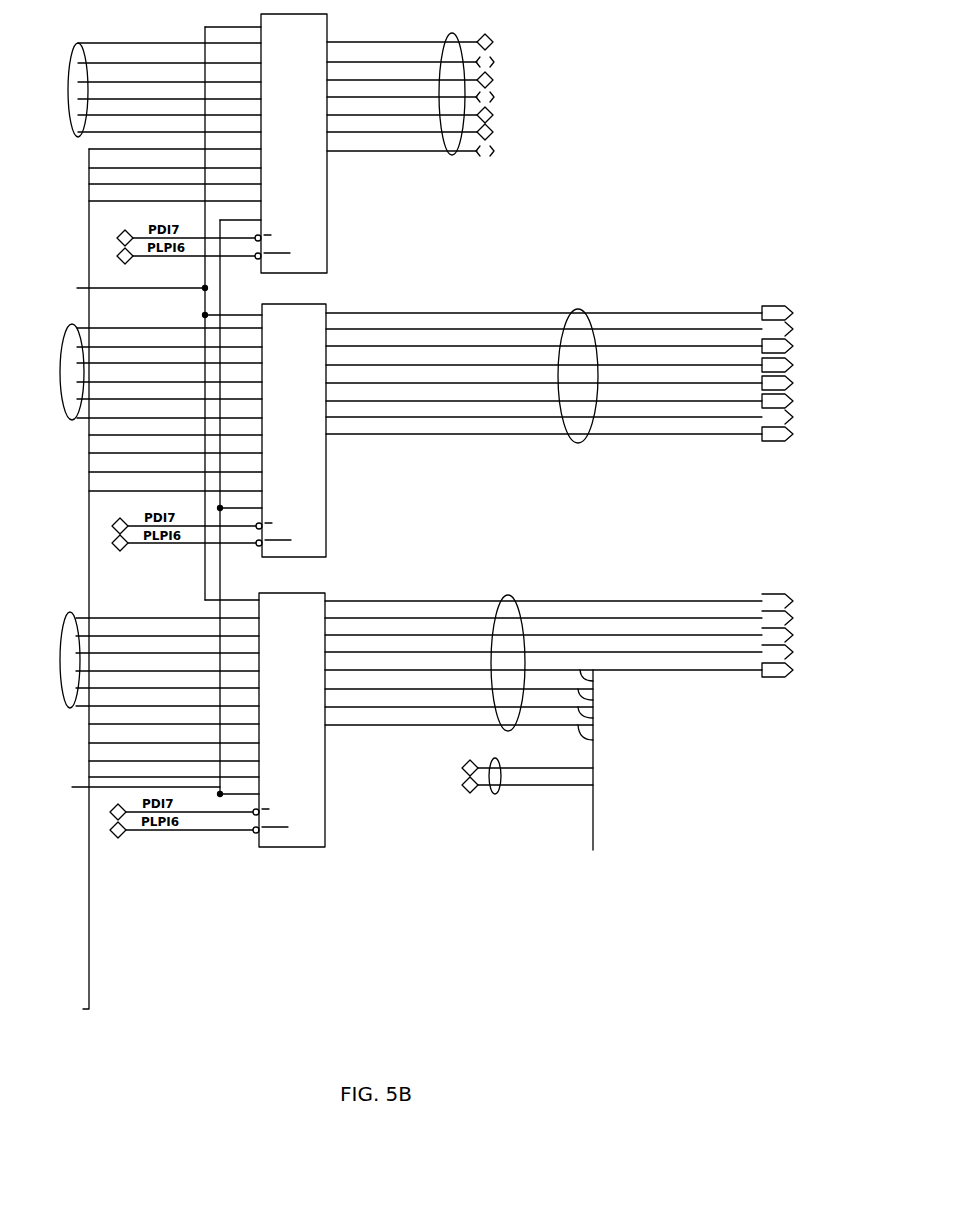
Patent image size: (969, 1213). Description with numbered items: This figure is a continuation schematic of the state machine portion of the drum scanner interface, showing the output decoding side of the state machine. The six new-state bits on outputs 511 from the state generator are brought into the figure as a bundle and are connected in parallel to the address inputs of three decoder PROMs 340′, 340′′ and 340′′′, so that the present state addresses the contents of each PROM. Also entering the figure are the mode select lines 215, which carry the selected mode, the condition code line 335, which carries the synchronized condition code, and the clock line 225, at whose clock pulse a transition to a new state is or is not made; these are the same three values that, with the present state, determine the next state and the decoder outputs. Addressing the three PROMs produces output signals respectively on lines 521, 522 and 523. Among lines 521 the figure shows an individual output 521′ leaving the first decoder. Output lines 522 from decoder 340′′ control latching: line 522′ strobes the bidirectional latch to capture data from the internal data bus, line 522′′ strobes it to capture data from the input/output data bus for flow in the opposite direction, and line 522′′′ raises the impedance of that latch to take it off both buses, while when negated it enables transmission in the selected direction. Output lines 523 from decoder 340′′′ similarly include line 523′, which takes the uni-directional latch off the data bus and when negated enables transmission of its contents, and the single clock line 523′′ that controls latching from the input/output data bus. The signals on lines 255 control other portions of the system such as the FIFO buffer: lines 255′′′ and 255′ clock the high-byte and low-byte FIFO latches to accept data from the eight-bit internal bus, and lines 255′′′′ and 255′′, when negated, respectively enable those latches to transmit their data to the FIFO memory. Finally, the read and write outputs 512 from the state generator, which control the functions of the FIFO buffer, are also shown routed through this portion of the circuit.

The new state outputs 511 is at (78, 138).
The condition code line 335 is at (123, 287).
The clock line 225 is at (130, 787).
The mode select lines 215 is at (64, 582).
The decoder PROM 340′ is at (328, 210).
The decoder PROM 340′′ is at (327, 526).
The decoder PROM 340′′′ is at (327, 806).
The output signal lines 521 is at (452, 33).
The ACK0 output 521′ is at (487, 73).
The output lines 522 is at (582, 309).
The latch strobe line 522′ is at (740, 312).
The latch strobe line 522′′ is at (745, 322).
The impedance control line 522′′′ is at (785, 342).
The output lines 523 is at (512, 594).
The latch enable line 523′ is at (740, 600).
The clock line 523′′ is at (750, 617).
The control signal lines 255 is at (796, 670).
The FIFO latch clock line 255′ is at (597, 674).
The FIFO latch enable line 255′′ is at (598, 693).
The FIFO latch clock line 255′′′ is at (598, 710).
The FIFO latch enable line 255′′′′ is at (598, 729).
The FIFO control outputs 512 is at (527, 786).